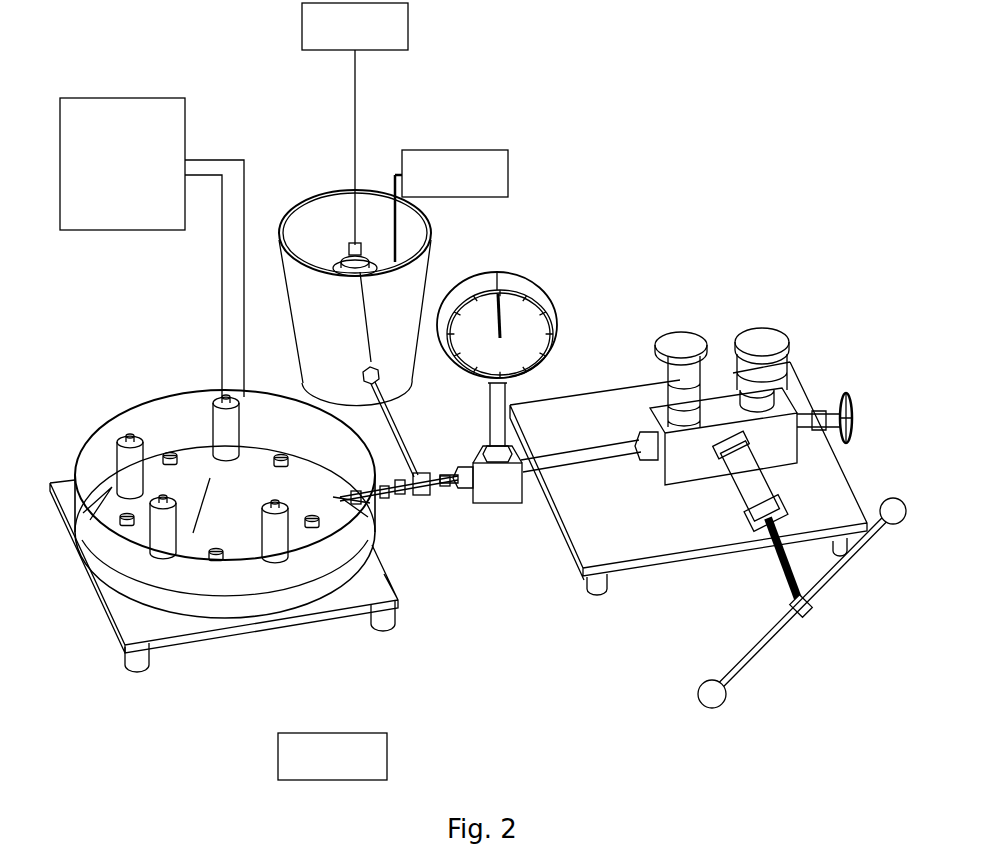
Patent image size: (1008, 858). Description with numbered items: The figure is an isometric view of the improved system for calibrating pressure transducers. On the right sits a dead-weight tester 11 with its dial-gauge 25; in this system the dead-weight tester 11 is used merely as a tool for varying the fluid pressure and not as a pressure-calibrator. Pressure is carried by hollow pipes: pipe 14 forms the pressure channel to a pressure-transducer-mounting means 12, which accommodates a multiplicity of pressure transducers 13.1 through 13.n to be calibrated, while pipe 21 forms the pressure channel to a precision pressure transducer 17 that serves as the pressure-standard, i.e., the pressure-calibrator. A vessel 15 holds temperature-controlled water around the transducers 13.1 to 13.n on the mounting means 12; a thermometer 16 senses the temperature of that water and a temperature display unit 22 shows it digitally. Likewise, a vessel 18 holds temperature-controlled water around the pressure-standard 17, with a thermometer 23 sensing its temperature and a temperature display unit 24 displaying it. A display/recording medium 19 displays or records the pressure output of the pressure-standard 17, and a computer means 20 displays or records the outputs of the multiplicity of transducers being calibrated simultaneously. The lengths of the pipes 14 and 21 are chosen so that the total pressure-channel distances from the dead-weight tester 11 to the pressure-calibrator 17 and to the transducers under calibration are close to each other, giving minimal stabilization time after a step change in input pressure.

The dead-weight tester 11 is at (786, 330).
The pressure-transducer-mounting means 12 is at (196, 442).
The pressure transducer 13.1 is at (209, 409).
The pressure transducer 13.n is at (274, 534).
The pipe 14 is at (403, 498).
The vessel 15 is at (350, 555).
The thermometer 16 is at (194, 534).
The precision pressure transducer 17 is at (343, 243).
The vessel 18 is at (433, 250).
The display/recording medium 19 is at (355, 124).
The computer means 20 is at (152, 248).
The pipe 21 is at (409, 443).
The temperature display unit 22 is at (210, 478).
The thermometer 23 is at (403, 212).
The temperature display unit 24 is at (455, 173).
The dial-gauge 25 is at (552, 290).